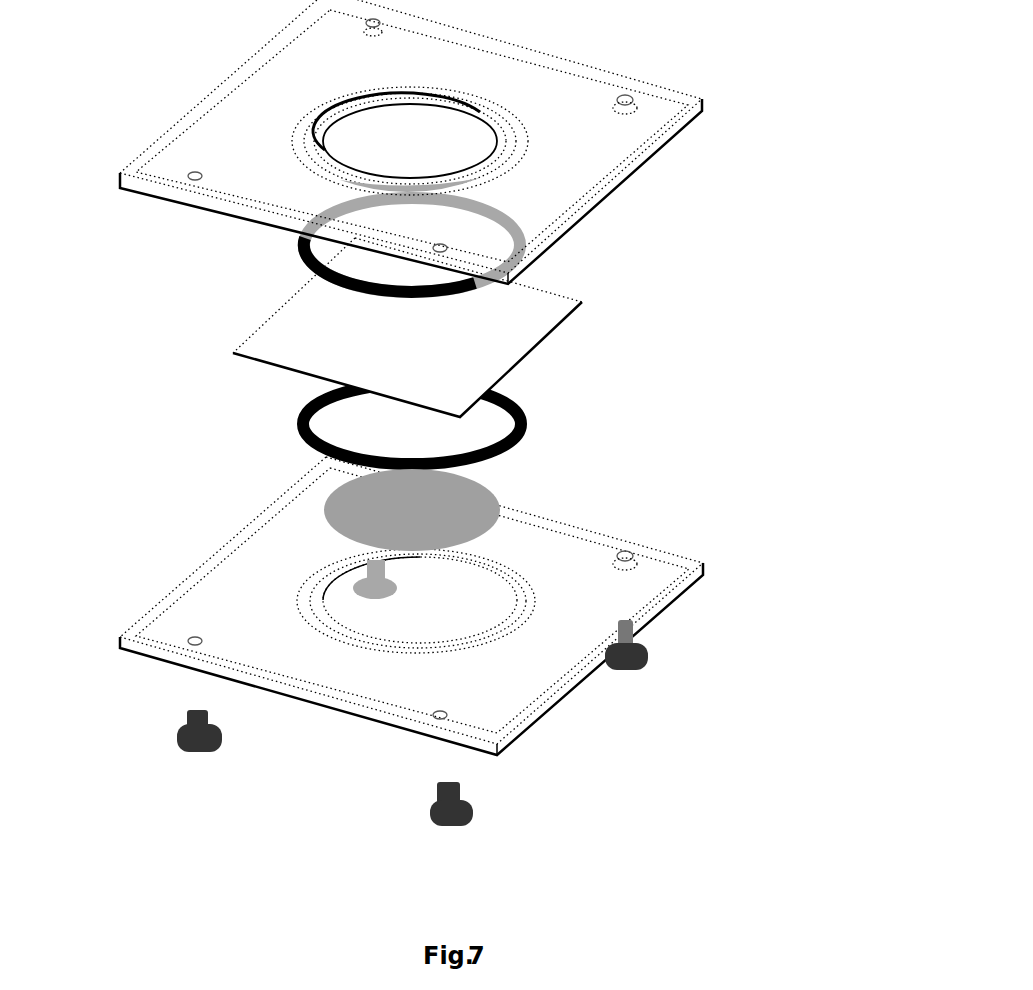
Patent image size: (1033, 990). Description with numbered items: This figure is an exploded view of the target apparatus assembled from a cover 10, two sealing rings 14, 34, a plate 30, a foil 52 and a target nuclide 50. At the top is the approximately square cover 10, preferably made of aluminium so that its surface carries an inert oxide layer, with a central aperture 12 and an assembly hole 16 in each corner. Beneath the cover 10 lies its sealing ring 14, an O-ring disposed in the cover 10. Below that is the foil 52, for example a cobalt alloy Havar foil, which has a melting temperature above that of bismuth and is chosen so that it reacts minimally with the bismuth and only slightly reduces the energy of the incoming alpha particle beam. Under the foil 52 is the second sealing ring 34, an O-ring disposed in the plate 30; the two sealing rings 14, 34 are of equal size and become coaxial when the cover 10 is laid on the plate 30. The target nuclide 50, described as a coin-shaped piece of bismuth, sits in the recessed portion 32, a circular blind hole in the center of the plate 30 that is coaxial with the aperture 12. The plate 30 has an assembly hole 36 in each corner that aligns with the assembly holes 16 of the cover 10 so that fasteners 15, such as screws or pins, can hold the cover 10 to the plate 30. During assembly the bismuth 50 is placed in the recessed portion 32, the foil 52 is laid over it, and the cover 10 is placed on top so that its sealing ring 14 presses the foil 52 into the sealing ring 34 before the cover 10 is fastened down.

The cover 10 is at (470, 36).
The aperture 12 is at (366, 127).
The sealing ring 14 is at (302, 257).
The fasteners 15 is at (445, 808).
The assembly hole 16 is at (624, 97).
The plate 30 is at (656, 607).
The recessed portion 32 is at (357, 613).
The sealing ring 34 is at (527, 416).
The assembly hole 36 is at (622, 556).
The target nuclide 50 is at (360, 510).
The foil 52 is at (305, 339).